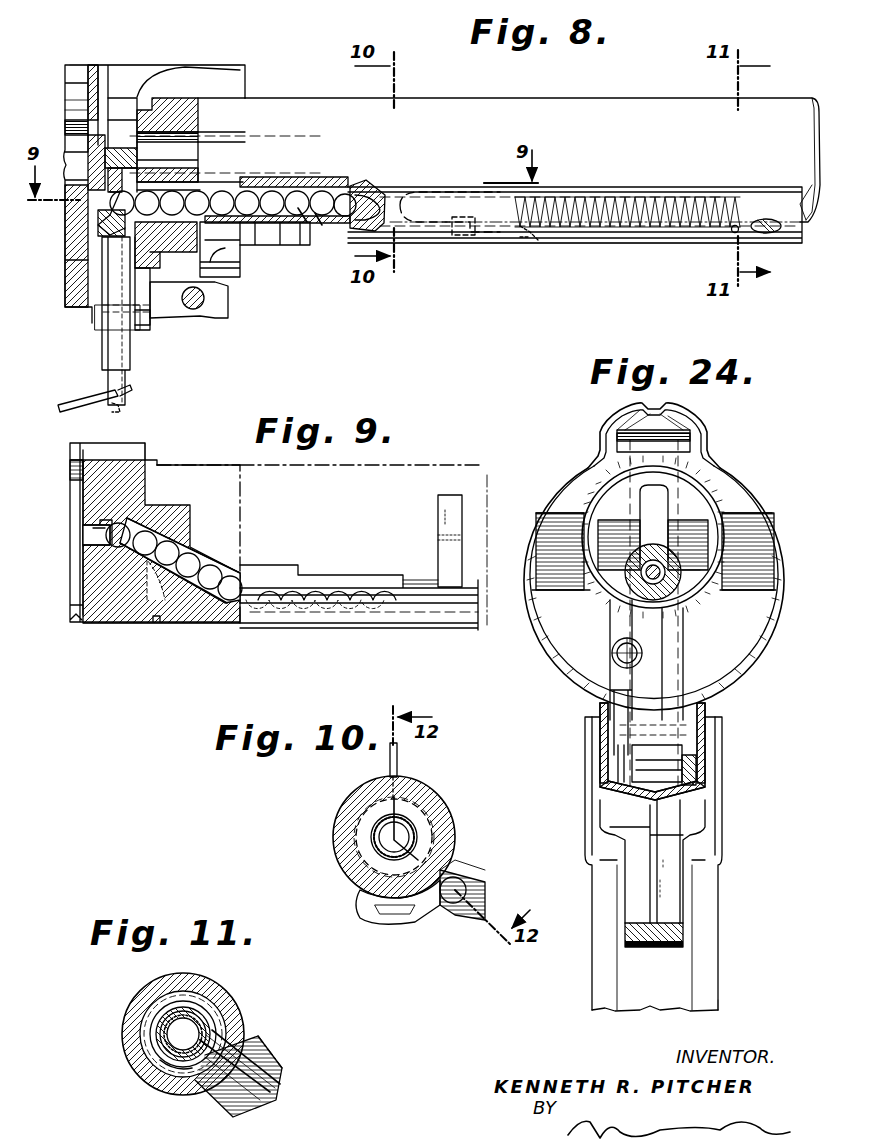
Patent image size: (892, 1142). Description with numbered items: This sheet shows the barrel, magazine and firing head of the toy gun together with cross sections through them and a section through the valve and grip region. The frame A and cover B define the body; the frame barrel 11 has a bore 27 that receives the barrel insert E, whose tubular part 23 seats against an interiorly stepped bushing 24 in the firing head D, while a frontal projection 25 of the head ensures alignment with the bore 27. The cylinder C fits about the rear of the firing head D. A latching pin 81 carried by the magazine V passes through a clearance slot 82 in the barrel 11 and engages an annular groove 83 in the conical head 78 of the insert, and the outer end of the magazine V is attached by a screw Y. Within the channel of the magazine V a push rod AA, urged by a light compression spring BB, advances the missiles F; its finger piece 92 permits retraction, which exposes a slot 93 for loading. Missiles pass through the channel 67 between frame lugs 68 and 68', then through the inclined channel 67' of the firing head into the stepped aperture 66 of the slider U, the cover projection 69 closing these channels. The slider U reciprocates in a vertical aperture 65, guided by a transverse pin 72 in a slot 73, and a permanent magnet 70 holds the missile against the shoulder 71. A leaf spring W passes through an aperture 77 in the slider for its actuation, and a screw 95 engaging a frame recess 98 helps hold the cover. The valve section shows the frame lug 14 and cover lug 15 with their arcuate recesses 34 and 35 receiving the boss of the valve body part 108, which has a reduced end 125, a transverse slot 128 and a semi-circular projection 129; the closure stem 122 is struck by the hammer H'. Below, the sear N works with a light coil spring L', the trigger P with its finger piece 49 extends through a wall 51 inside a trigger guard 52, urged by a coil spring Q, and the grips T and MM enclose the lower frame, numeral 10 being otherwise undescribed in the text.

In FIG. 8, the frame barrel 11 is at (622, 104).
In FIG. 10, the frame barrel 11 is at (447, 818).
In FIG. 11, the frame barrel 11 is at (172, 982).
In FIG. 8, the vertical aperture 65 is at (140, 84).
In FIG. 8, the interiorly stepped bushing 24 is at (152, 112).
In FIG. 8, the tubular part 23 is at (190, 120).
In FIG. 10, the tubular part 23 is at (372, 838).
In FIG. 11, the tubular part 23 is at (166, 1036).
In FIG. 8, the permanent magnet 70 is at (105, 155).
In FIG. 8, the shoulder 71 is at (110, 178).
In FIG. 8, the stepped aperture 66 is at (95, 210).
In FIG. 8, the channel 67 is at (190, 169).
In FIG. 9, the channel 67 is at (194, 569).
In FIG. 8, the inclined channel 67' is at (167, 162).
In FIG. 9, the inclined channel 67' is at (183, 506).
In FIG. 8, the lug 68 is at (241, 192).
In FIG. 8, the lug 68' is at (255, 249).
In FIG. 8, the frontal projection 25 is at (162, 238).
In FIG. 8, the slot 73 is at (142, 283).
In FIG. 8, the transverse pin 72 is at (140, 320).
In FIG. 8, the recess 98 is at (218, 290).
In FIG. 8, the screw 95 is at (200, 312).
In FIG. 8, the aperture 77 is at (115, 410).
In FIG. 8, the finger piece 92 is at (480, 244).
In FIG. 9, the finger piece 92 is at (460, 512).
In FIG. 10, the finger piece 92 is at (375, 905).
In FIG. 8, the slot 93 is at (538, 252).
In FIG. 8, the latching pin 81 is at (733, 232).
In FIG. 11, the latching pin 81 is at (258, 1098).
In FIG. 9, the projection 69 is at (148, 612).
In FIG. 24, the companion lug 15 is at (590, 480).
In FIG. 24, the internal lug 14 is at (720, 485).
In FIG. 24, the valve body part 108 is at (720, 515).
In FIG. 24, the arcuate recess 34 is at (725, 540).
In FIG. 24, the arcuate recess 35 is at (583, 540).
In FIG. 24, the transverse slot 128 is at (645, 510).
In FIG. 24, the central stem 122 is at (648, 565).
In FIG. 24, the reduced end 125 is at (702, 565).
In FIG. 24, the semi-circular projection 129 is at (672, 592).
In FIG. 24, the wall 51 is at (612, 795).
In FIG. 24, the finger piece 49 is at (676, 894).
In FIG. 24, the trigger guard 52 is at (628, 935).
In FIG. 24, the lower tube 10 is at (722, 1005).
In FIG. 10, the bore 27 is at (400, 820).
In FIG. 11, the bore 27 is at (165, 1065).
In FIG. 10, the conical head 78 is at (455, 836).
In FIG. 11, the conical head 78 is at (195, 1002).
In FIG. 11, the annular groove 83 is at (222, 1028).
In FIG. 11, the clearance slot 82 is at (240, 1058).
In FIG. 8, the frame A is at (122, 66).
In FIG. 9, the frame A is at (246, 466).
In FIG. 24, the frame A is at (722, 448).
In FIG. 9, the cover B is at (208, 628).
In FIG. 24, the cover B is at (598, 452).
In FIG. 8, the cylinder C is at (70, 118).
In FIG. 9, the cylinder C is at (72, 443).
In FIG. 8, the firing head D is at (98, 72).
In FIG. 9, the firing head D is at (150, 455).
In FIG. 10, the barrel insert E is at (375, 808).
In FIG. 11, the barrel insert E is at (152, 1016).
In FIG. 8, the missile F is at (105, 225).
In FIG. 9, the missile F is at (112, 535).
In FIG. 8, the slider U is at (142, 352).
In FIG. 9, the slider U is at (100, 520).
In FIG. 8, the magazine V is at (438, 242).
In FIG. 9, the magazine V is at (340, 620).
In FIG. 10, the magazine V is at (490, 890).
In FIG. 11, the magazine V is at (285, 1084).
In FIG. 8, the spring W is at (62, 400).
In FIG. 24, the spring W is at (632, 764).
In FIG. 8, the screw Y is at (770, 236).
In FIG. 8, the push rod AA is at (445, 180).
In FIG. 9, the push rod AA is at (424, 582).
In FIG. 10, the push rod AA is at (460, 880).
In FIG. 8, the compression spring BB is at (660, 183).
In FIG. 24, the coil spring L' is at (610, 650).
In FIG. 24, the hammer structure H' is at (691, 664).
In FIG. 24, the sear N is at (622, 683).
In FIG. 24, the trigger P is at (690, 737).
In FIG. 24, the coil spring Q is at (700, 780).
In FIG. 24, the grip T is at (582, 884).
In FIG. 24, the grip MM is at (725, 938).